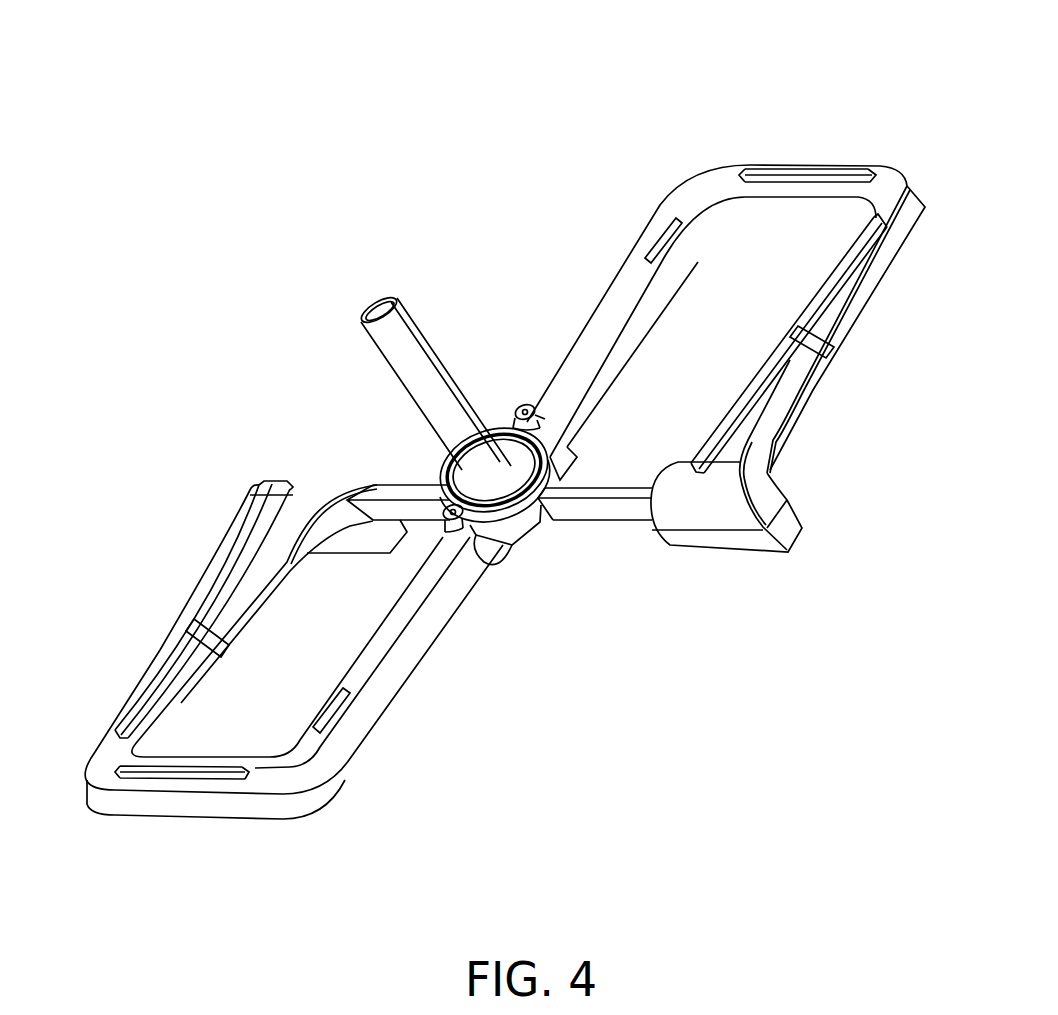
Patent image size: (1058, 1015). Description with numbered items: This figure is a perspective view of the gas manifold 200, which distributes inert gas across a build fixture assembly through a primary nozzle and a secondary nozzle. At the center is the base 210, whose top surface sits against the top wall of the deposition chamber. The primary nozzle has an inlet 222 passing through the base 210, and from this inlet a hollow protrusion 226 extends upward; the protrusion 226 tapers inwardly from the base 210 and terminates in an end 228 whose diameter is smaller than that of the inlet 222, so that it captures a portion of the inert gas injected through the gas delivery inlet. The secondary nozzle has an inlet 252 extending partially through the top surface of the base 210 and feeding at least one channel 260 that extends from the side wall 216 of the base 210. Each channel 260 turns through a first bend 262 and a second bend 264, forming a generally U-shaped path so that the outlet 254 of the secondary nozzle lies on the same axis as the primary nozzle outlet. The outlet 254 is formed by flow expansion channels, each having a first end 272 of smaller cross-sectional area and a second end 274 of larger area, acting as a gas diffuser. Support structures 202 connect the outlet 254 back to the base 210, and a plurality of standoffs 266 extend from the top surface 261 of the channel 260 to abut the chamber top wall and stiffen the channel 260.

The gas manifold 200 is at (277, 98).
The support structures 202 is at (578, 446).
The base 210 is at (530, 527).
The side wall 216 is at (555, 482).
The inlet 222 is at (455, 468).
The hollow protrusion 226 is at (447, 365).
The end 228 is at (384, 298).
The inlet 252 is at (515, 412).
The outlet 254 is at (255, 486).
The channel 260 is at (603, 298).
The top surface 261 is at (387, 637).
The first bend 262 is at (700, 186).
The second bend 264 is at (900, 178).
The standoffs 266 is at (806, 168).
The first end 272 is at (837, 342).
The second end 274 is at (798, 555).